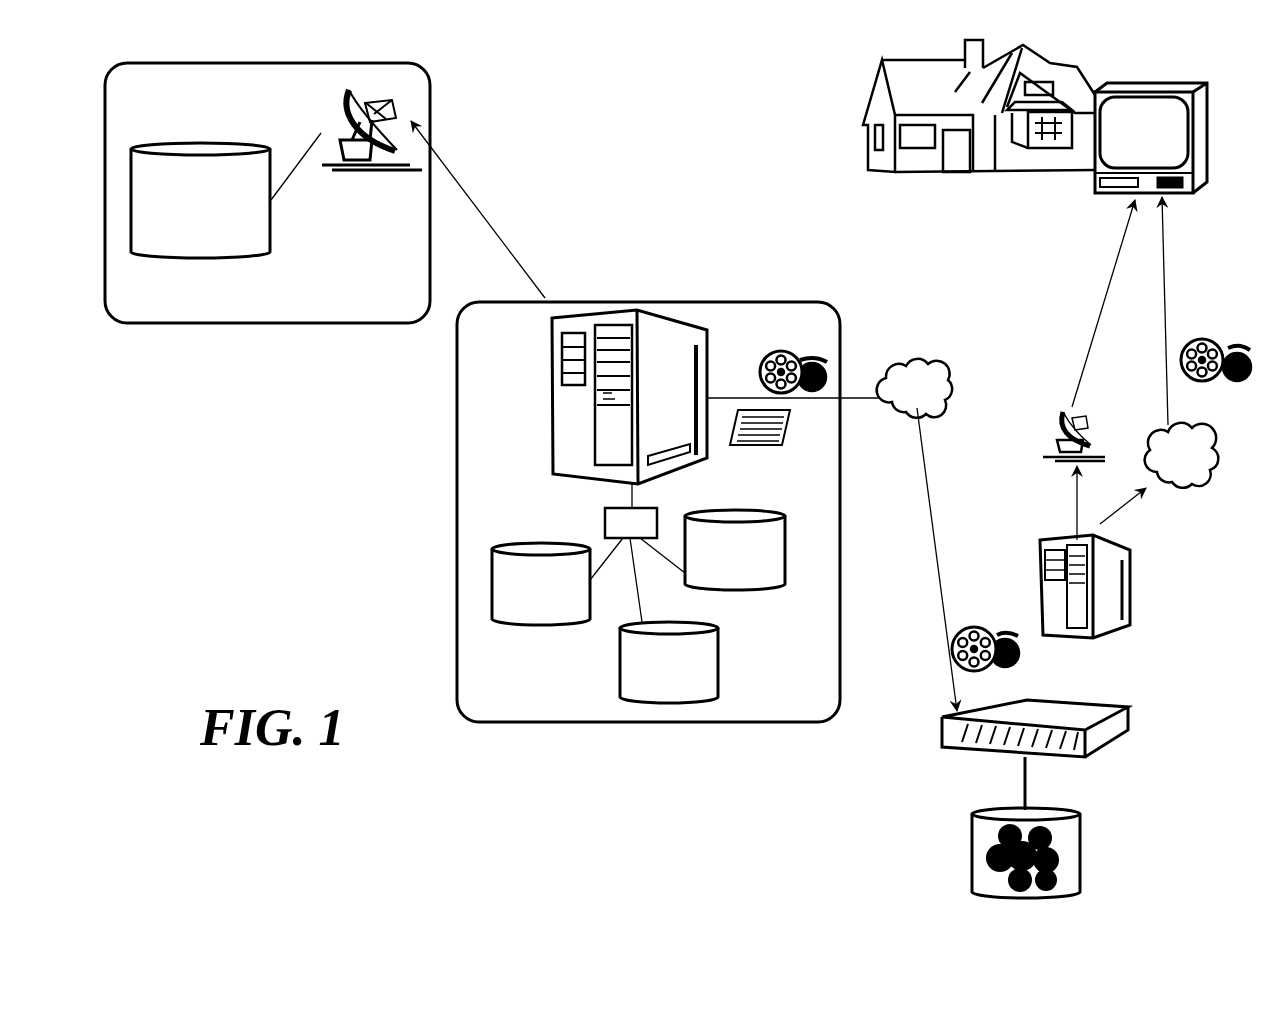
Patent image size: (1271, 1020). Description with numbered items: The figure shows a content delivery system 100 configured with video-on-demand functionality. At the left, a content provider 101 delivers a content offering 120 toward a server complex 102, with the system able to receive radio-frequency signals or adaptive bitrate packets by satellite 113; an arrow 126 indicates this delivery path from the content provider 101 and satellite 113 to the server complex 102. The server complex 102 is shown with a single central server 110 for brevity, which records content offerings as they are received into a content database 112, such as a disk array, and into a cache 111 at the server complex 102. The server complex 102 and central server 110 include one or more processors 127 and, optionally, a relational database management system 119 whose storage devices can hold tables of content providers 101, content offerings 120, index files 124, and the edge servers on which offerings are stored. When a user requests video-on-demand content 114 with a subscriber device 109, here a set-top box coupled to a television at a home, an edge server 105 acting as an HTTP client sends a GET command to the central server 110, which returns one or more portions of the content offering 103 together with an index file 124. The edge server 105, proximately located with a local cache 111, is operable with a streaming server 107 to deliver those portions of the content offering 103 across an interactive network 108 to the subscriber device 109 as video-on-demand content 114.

The content delivery system 100 is at (333, 434).
The content provider 101 is at (200, 142).
The satellite 113 is at (368, 164).
The satellite communication link 126 is at (430, 128).
The server complex 102 is at (646, 302).
The central server 110 is at (550, 370).
The portions of the content offering 103 is at (800, 352).
The index file 124 is at (785, 437).
The processors 127 is at (618, 527).
The cache 111 is at (512, 625).
The relational database management system 119 is at (732, 592).
The content database 112 is at (618, 647).
The subscriber device 109 is at (1210, 178).
The interactive network 108 is at (1211, 484).
The video-on-demand content 114 is at (1203, 337).
The streaming server 107 is at (1105, 596).
The content offering 120 is at (976, 622).
The edge server 105 is at (1037, 745).